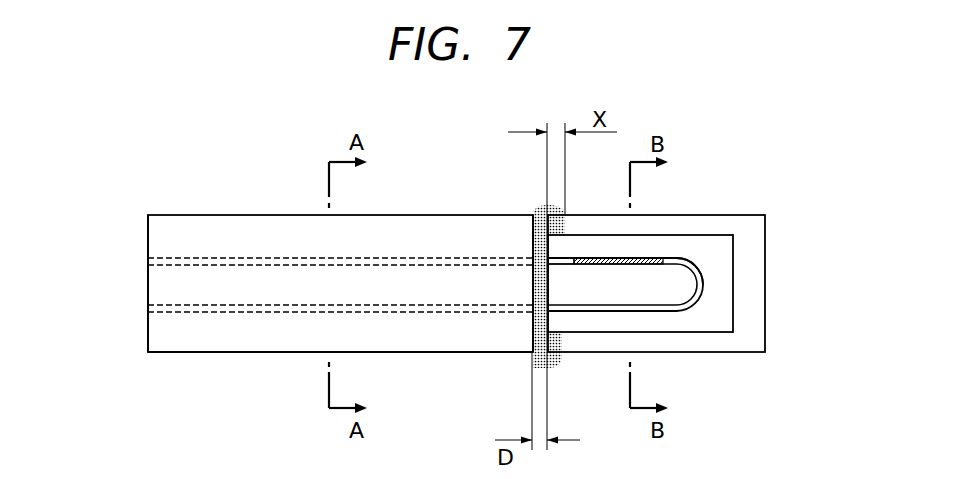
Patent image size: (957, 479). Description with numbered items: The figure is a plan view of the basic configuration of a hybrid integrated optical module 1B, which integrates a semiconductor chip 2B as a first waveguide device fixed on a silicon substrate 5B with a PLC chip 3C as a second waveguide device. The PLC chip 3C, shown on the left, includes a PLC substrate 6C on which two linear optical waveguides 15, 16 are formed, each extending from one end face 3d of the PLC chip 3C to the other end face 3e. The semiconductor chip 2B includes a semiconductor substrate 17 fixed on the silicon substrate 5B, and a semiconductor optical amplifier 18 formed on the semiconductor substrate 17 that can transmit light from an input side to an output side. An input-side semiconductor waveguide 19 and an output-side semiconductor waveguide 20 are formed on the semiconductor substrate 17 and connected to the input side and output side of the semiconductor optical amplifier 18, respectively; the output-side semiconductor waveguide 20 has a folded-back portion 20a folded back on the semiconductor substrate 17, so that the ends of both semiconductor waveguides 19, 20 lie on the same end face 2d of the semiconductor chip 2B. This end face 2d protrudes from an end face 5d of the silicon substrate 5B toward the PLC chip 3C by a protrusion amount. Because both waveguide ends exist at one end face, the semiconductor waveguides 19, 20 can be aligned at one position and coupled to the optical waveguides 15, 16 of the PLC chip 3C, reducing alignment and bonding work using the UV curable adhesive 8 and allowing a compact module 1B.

The hybrid integrated optical module 1B is at (412, 196).
The PLC chip 3C is at (211, 353).
The one end face 3d is at (148, 330).
The other end face 3e is at (532, 213).
The optical waveguide 15 is at (225, 258).
The optical waveguide 16 is at (180, 305).
The PLC substrate 6C is at (440, 353).
The UV curable adhesive 8 is at (538, 285).
The end face 2d is at (535, 325).
The end face 5d is at (560, 355).
The silicon substrate 5B is at (690, 353).
The semiconductor chip 2B is at (707, 235).
The input-side semiconductor waveguide 19 is at (563, 258).
The semiconductor optical amplifier 18 is at (642, 258).
The output-side semiconductor waveguide 20 is at (660, 312).
The folded-back portion 20a is at (705, 272).
The semiconductor substrate 17 is at (708, 308).